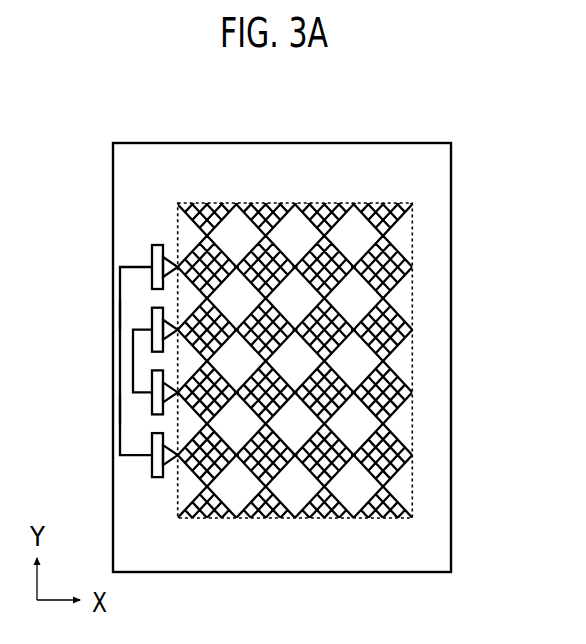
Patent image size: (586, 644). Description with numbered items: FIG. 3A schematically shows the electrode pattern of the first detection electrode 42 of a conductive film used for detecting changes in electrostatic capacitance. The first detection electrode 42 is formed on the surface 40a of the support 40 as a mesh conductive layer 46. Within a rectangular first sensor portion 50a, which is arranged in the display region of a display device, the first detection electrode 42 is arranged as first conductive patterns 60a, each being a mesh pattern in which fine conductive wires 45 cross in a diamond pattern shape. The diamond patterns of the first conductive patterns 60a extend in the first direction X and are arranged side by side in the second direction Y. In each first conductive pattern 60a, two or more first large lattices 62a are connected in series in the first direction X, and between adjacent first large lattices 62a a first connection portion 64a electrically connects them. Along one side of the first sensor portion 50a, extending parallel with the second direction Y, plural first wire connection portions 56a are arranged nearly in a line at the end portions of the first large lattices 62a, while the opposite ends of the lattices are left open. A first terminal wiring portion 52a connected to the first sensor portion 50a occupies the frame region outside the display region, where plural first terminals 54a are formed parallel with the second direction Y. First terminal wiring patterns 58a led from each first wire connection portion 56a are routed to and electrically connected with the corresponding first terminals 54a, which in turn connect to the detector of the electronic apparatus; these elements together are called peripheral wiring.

The support 40 is at (453, 158).
The surface 40a is at (406, 158).
The first detection electrode 42 is at (397, 223).
The fine conductive wires 45 is at (393, 459).
The mesh conductive layer 46 is at (218, 188).
The first sensor portion 50a is at (390, 528).
The first terminal wiring portion 52a is at (121, 257).
The first terminals 54a is at (100, 340).
The first wire connection portions 56a is at (158, 244).
The first terminal wiring patterns 58a is at (140, 338).
The first conductive pattern 60a is at (405, 247).
The first large lattices 62a is at (223, 482).
The first connection portion 64a is at (298, 458).